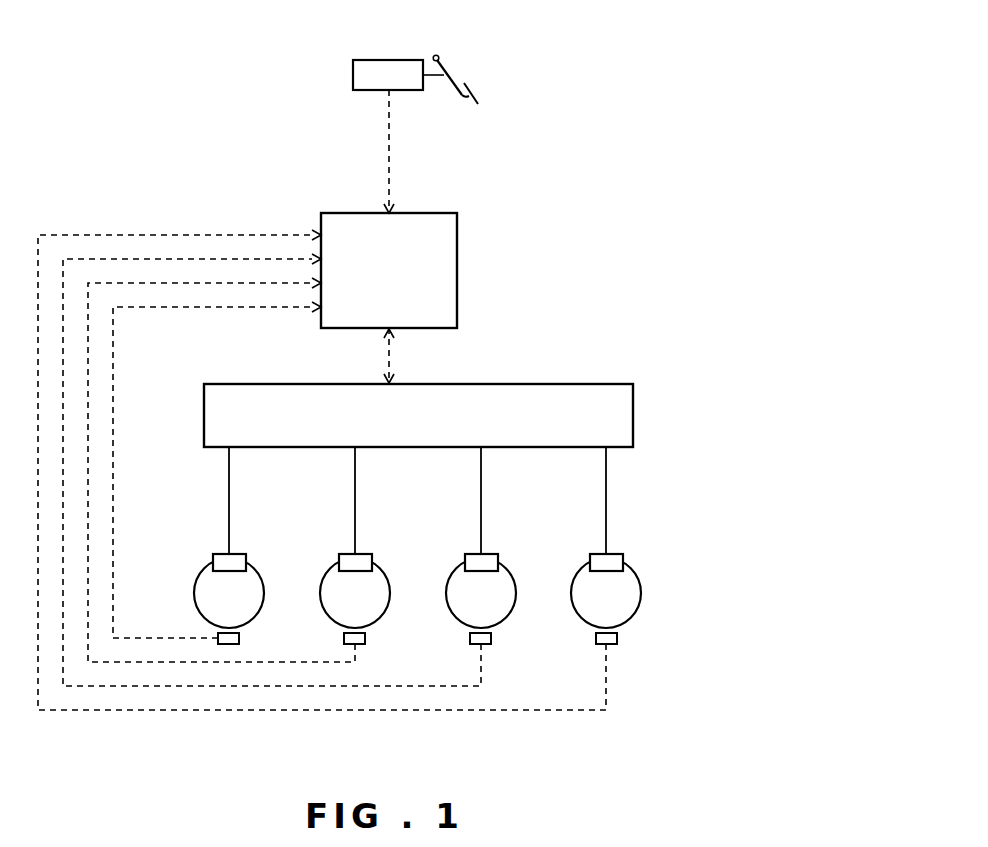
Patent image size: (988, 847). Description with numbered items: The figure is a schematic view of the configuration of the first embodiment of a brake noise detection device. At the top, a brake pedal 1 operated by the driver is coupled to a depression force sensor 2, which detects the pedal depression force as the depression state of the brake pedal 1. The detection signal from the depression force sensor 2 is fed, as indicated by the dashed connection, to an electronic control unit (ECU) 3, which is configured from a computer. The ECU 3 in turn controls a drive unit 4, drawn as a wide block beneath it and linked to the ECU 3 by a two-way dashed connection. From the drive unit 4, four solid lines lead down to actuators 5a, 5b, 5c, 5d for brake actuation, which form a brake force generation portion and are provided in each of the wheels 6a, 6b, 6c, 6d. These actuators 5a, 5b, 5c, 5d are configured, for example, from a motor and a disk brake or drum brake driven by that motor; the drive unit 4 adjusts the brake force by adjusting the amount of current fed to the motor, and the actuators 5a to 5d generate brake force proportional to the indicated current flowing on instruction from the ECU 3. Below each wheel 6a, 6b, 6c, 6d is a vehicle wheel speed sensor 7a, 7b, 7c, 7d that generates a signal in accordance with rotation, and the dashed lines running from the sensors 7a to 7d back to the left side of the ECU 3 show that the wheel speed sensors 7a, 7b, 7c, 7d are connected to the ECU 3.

The brake pedal 1 is at (477, 99).
The depression force sensor 2 is at (387, 60).
The electronic control unit (ECU) 3 is at (457, 280).
The drive unit 4 is at (633, 418).
The actuator for brake actuation 5a is at (207, 556).
The actuator for brake actuation 5b is at (333, 556).
The actuator for brake actuation 5c is at (459, 556).
The actuator for brake actuation 5d is at (584, 556).
The wheel 6a is at (194, 593).
The wheel 6b is at (320, 593).
The wheel 6c is at (446, 593).
The wheel 6d is at (571, 593).
The vehicle wheel speed sensor 7a is at (239, 638).
The vehicle wheel speed sensor 7b is at (365, 638).
The vehicle wheel speed sensor 7c is at (491, 638).
The vehicle wheel speed sensor 7d is at (617, 638).